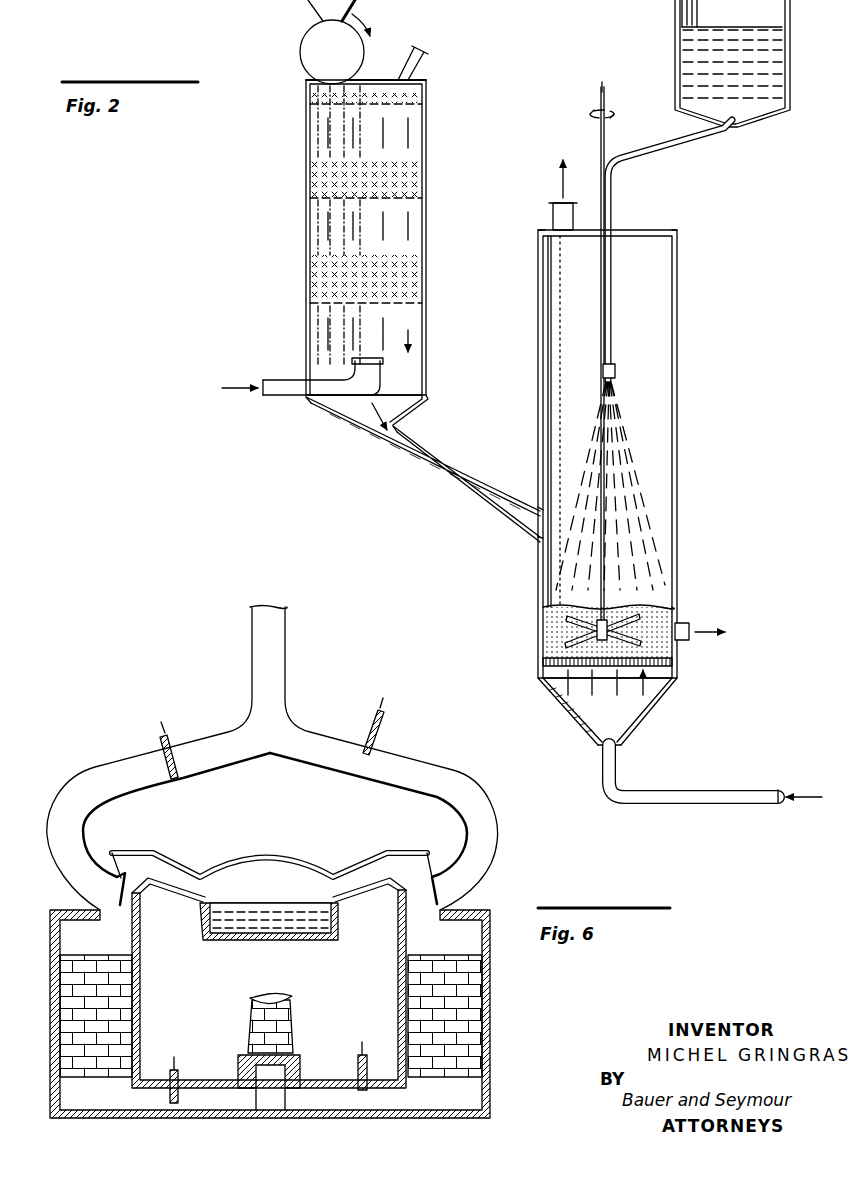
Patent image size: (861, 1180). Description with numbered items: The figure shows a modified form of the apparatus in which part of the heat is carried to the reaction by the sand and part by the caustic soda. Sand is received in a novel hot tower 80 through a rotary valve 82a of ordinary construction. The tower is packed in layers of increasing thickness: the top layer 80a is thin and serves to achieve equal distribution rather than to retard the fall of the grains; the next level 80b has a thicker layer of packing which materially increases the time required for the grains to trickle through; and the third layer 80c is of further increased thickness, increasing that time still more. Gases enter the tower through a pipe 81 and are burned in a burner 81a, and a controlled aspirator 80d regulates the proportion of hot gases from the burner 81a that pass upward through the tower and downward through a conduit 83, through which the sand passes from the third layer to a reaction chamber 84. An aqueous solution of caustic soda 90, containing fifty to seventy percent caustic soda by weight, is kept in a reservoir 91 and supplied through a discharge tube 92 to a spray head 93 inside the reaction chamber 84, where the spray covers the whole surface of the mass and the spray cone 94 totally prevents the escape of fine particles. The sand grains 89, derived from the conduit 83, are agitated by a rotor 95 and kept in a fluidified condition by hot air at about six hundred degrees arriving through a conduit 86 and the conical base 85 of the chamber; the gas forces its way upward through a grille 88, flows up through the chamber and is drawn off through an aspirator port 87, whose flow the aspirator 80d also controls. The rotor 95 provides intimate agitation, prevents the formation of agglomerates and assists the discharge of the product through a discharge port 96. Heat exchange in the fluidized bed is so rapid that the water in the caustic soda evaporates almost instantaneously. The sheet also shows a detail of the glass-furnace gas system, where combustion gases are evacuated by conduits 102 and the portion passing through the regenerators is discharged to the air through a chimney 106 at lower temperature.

In FIG. 2, the hot tower 80 is at (305, 234).
In FIG. 2, the top layer 80a is at (420, 102).
In FIG. 2, the next level 80b is at (420, 176).
In FIG. 2, the third layer 80c is at (422, 284).
In FIG. 2, the controlled aspirator 80d is at (424, 57).
In FIG. 2, the pipe 81 is at (283, 398).
In FIG. 2, the burner 81a is at (382, 362).
In FIG. 2, the rotary valve 82a is at (308, 43).
In FIG. 2, the conduit 83 is at (476, 503).
In FIG. 2, the reaction chamber 84 is at (655, 396).
In FIG. 2, the conical base 85 is at (580, 722).
In FIG. 2, the conduit 86 is at (700, 812).
In FIG. 2, the aspirator port 87 is at (553, 219).
In FIG. 2, the grille 88 is at (650, 668).
In FIG. 2, the sand grains 89 is at (655, 612).
In FIG. 2, the aqueous solution of caustic soda 90 is at (745, 88).
In FIG. 2, the reservoir 91 is at (682, 12).
In FIG. 2, the discharge tube 92 is at (668, 153).
In FIG. 2, the spray head 93 is at (615, 364).
In FIG. 2, the spray cone 94 is at (625, 526).
In FIG. 2, the rotor 95 is at (562, 628).
In FIG. 2, the discharge port 96 is at (689, 641).
In FIG. 6, the conduits 102 is at (258, 651).
In FIG. 6, the chimney 106 is at (258, 1010).